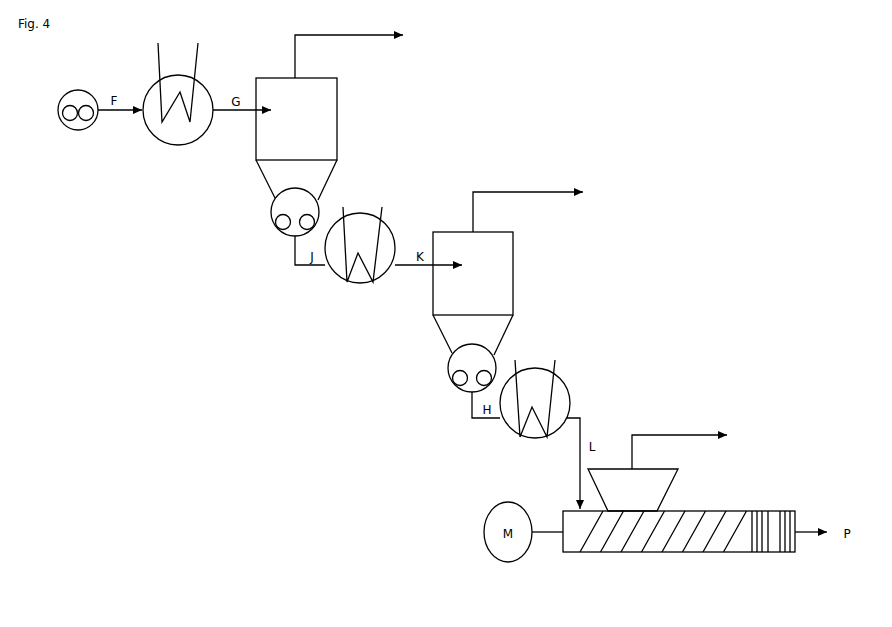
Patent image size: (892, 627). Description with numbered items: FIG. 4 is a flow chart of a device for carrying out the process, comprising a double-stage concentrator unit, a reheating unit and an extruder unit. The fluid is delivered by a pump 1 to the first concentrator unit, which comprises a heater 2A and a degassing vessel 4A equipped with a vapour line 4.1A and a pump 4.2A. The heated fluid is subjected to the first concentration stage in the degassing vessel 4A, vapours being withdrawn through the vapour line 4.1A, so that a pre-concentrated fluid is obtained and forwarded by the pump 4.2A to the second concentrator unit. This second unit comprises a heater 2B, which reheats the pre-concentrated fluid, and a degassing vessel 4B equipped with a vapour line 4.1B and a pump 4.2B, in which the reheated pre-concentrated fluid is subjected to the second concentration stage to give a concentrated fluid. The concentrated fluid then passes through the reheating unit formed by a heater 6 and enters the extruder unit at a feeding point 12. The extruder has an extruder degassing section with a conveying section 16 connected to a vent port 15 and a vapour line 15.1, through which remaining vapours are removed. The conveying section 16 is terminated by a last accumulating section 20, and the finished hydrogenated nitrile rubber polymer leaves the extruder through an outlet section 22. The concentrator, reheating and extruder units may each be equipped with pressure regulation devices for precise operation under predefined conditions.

The pump 1 is at (78, 131).
The heater 2A is at (178, 146).
The degassing vessel 4A is at (339, 135).
The vapor line 4.1A is at (349, 48).
The pump 4.2A is at (270, 213).
The heater 2B is at (348, 285).
The degassing vessel 4B is at (515, 290).
The vapor line 4.1B is at (528, 204).
The pump 4.2B is at (446, 370).
The heater 6 is at (572, 395).
The feeding point 12 is at (578, 527).
The vent port 15 is at (650, 492).
The vapor line 15.1 is at (679, 445).
The conveying section 16 is at (680, 527).
The last accumulating section 20 is at (757, 555).
The outlet section 22 is at (787, 555).